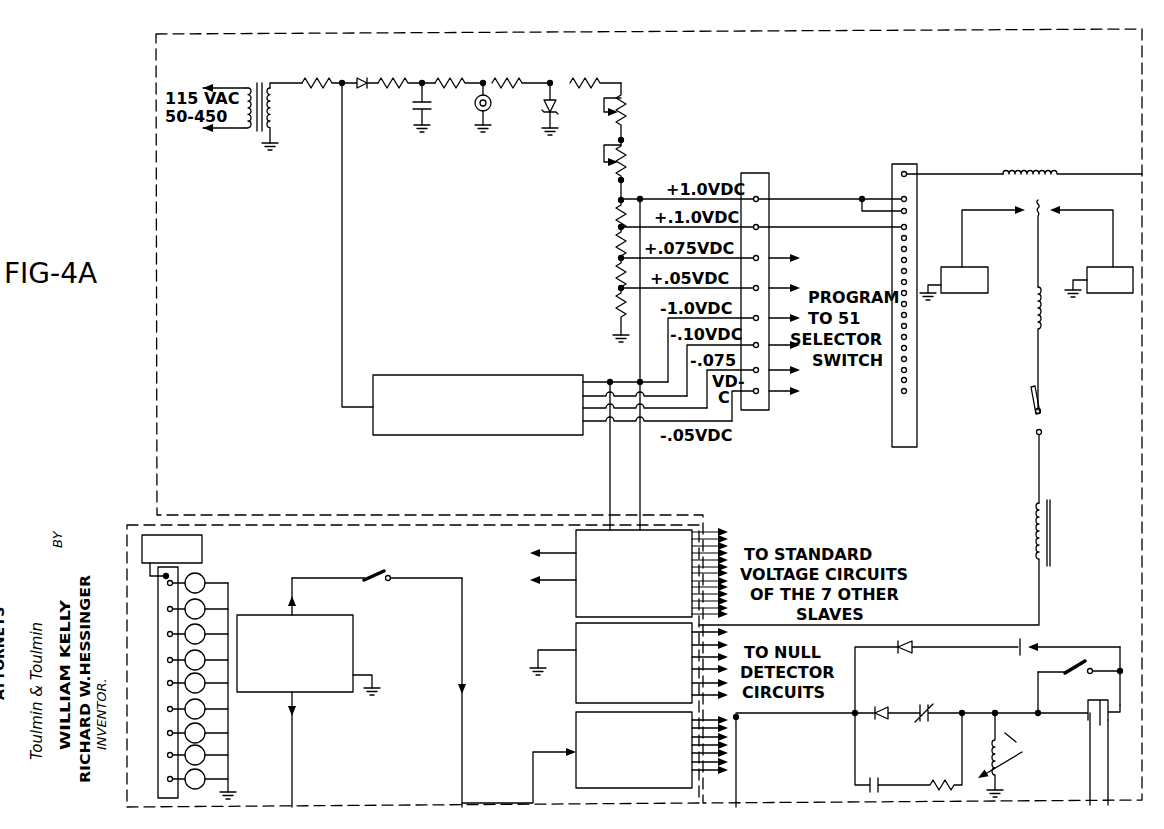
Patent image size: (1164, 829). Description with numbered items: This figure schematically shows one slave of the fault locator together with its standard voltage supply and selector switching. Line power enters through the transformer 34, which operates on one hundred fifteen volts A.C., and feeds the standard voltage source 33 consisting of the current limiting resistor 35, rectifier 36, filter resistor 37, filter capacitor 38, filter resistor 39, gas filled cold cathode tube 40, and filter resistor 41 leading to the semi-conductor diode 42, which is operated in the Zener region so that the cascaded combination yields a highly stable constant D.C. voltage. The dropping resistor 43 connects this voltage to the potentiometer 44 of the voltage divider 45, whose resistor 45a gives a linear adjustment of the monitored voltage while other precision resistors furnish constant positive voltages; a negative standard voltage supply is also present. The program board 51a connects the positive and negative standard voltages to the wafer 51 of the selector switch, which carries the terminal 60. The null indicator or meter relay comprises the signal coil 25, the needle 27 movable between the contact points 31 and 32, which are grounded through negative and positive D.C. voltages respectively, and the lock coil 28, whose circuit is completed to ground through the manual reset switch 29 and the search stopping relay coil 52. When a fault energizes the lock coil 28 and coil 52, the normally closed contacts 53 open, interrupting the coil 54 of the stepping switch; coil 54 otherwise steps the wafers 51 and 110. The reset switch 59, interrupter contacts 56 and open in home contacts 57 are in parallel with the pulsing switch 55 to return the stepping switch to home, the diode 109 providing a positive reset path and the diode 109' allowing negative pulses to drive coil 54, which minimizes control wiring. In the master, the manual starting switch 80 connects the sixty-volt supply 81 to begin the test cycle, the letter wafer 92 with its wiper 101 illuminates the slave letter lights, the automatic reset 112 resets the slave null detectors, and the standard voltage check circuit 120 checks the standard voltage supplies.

The signal coil 25 is at (1032, 170).
The needle 27 is at (1039, 234).
The lock coil 28 is at (1033, 312).
The reset switch 29 is at (1035, 418).
The contact point 31 is at (1058, 207).
The contact point 32 is at (1012, 207).
The standard voltage source 33 is at (461, 314).
The transformer 34 is at (246, 138).
The current limiting resistor 35 is at (303, 81).
The rectifier 36 is at (360, 97).
The filter resistor 37 is at (400, 80).
The filter capacitor 38 is at (416, 112).
The filter resistor 39 is at (455, 93).
The gas filled cold cathode tube 40 is at (481, 113).
The filter resistor 41 is at (513, 96).
The semi-conductor diode 42 is at (548, 116).
The dropping resistor 43 is at (579, 96).
The potentiometer 44 is at (626, 108).
The voltage divider 45 is at (597, 203).
The resistor 45a is at (607, 152).
The wafer 51 is at (894, 418).
The program board 51a is at (758, 410).
The search stopping relay coil 52 is at (1041, 566).
The normally closed contacts 53 is at (937, 713).
The coil of the stepping switch 54 is at (1015, 755).
The pulsing and timing circuit 55 is at (578, 730).
The interrupter contacts 56 is at (1033, 645).
The open in home contacts 57 is at (1105, 718).
The reset switch 59 is at (1072, 669).
The selector switch terminal 60 is at (915, 173).
The manual starting switch 80 is at (403, 565).
The 60-volt source of supply 81 is at (352, 645).
The wafer 92 is at (168, 703).
The wiper 101 is at (166, 579).
The diode 109 is at (936, 670).
The diode 109' is at (899, 699).
The wafer 110 is at (1097, 768).
The automatic reset 112 is at (580, 648).
The standard voltage check circuit 120 is at (580, 598).